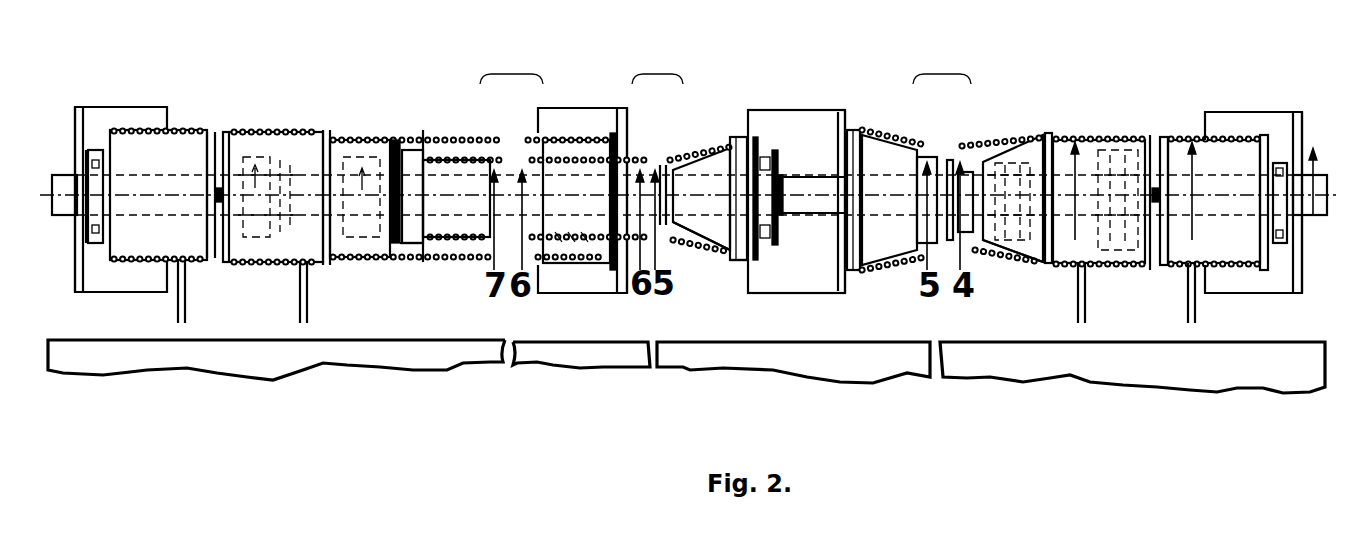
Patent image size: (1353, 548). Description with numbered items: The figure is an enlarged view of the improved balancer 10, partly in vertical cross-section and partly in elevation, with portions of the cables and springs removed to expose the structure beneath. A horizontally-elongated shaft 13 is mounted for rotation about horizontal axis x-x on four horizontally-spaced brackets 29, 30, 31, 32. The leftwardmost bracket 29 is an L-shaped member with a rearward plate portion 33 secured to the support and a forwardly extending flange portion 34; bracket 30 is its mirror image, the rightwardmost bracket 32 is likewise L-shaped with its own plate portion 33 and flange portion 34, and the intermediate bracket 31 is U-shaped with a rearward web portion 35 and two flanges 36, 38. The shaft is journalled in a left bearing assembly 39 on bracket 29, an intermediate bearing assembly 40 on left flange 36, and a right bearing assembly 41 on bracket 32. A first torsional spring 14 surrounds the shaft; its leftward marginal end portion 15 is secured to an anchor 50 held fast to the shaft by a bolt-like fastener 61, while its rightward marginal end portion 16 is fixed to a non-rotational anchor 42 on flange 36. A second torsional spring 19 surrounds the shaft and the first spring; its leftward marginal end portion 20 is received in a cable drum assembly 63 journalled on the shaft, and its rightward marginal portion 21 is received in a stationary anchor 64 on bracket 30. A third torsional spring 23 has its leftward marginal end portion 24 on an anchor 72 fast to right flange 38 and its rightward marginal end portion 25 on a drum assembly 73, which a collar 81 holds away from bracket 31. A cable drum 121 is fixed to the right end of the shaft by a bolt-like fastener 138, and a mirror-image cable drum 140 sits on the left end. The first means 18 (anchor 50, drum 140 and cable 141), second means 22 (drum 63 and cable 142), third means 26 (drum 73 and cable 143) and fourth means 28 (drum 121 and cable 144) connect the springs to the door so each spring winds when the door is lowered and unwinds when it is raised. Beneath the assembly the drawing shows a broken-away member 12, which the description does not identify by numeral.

The balancer 10 is at (805, 90).
The base 12 is at (536, 372).
The shaft 13 is at (1322, 160).
The first torsional spring 14 is at (683, 150).
The leftward marginal end portion 15 is at (437, 262).
The rightward marginal end portion 16 is at (715, 252).
The first means 18 is at (410, 238).
The second torsional spring 19 is at (437, 137).
The leftward marginal end portion 20 is at (350, 138).
The rightward marginal portion 21 is at (590, 130).
The second means 22 is at (316, 134).
The third torsional spring 23 is at (963, 138).
The leftward marginal end portion 24 is at (868, 268).
The rightward marginal end portion 25 is at (1025, 266).
The third means 26 is at (1064, 135).
The fourth means 28 is at (1178, 133).
The leftwardmost bracket 29 is at (107, 104).
The bracket 30 is at (553, 105).
The bracket 31 is at (778, 108).
The rightwardmost bracket 32 is at (1240, 108).
The rearward plate portion 33 is at (152, 112).
The flange portion 34 is at (77, 112).
The rearward web portion 35 is at (812, 120).
The left flange portion 36 is at (738, 133).
The right flange portion 38 is at (845, 125).
The left bearing assembly 39 is at (95, 245).
The intermediate bearing assembly 40 is at (767, 255).
The right bearing assembly 41 is at (1280, 250).
The anchor 42 is at (737, 262).
The anchor 50 is at (400, 136).
The bolt-like fastener 61 is at (425, 188).
The cable drum assembly 63 is at (318, 262).
The stationary anchor 64 is at (612, 128).
The anchor 72 is at (853, 272).
The drum assembly 73 is at (1042, 130).
The collar 81 is at (953, 265).
The cable drum 121 is at (1183, 265).
The bolt-like fastener 138 is at (1153, 135).
The cable drum 140 is at (188, 128).
The cable 141 is at (190, 312).
The cable 142 is at (298, 292).
The cable 143 is at (1086, 292).
The cable 144 is at (1198, 312).